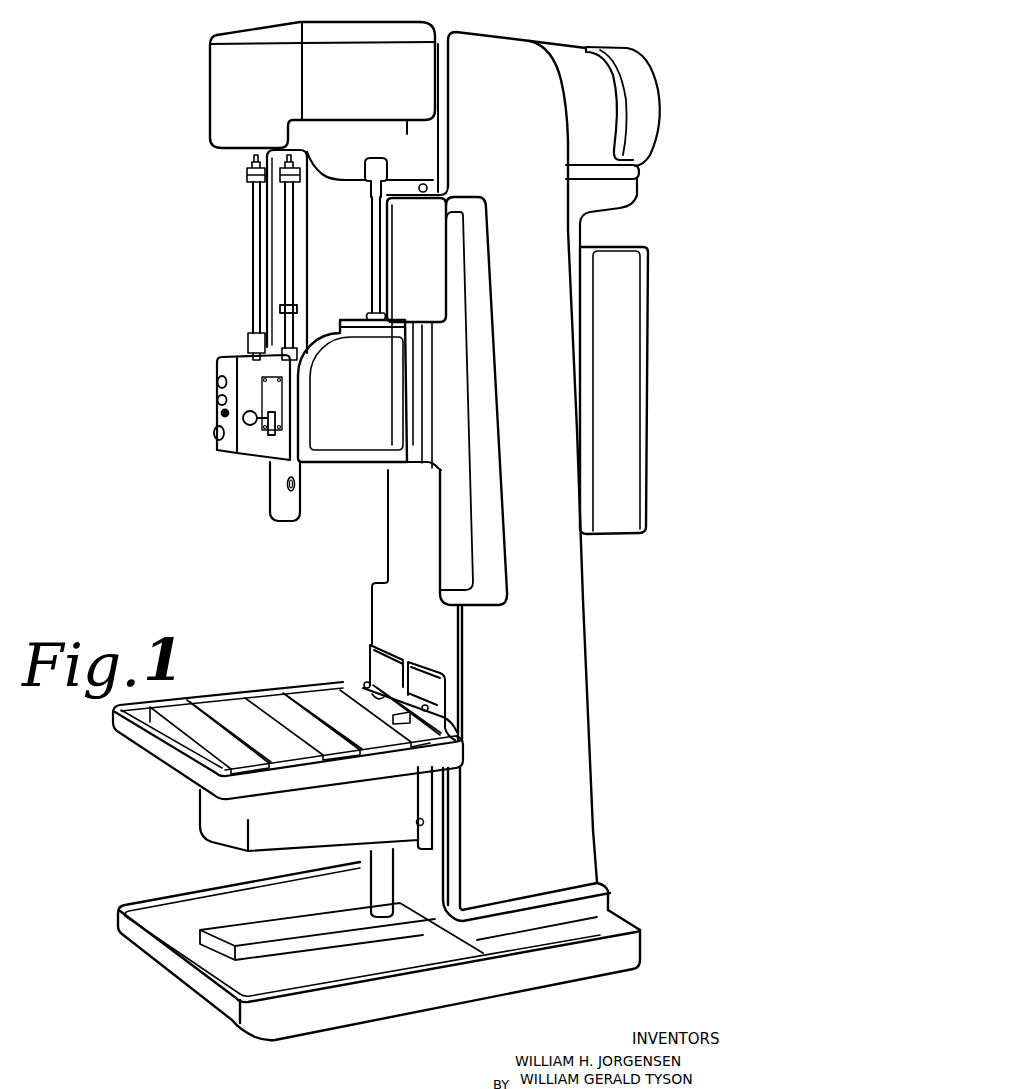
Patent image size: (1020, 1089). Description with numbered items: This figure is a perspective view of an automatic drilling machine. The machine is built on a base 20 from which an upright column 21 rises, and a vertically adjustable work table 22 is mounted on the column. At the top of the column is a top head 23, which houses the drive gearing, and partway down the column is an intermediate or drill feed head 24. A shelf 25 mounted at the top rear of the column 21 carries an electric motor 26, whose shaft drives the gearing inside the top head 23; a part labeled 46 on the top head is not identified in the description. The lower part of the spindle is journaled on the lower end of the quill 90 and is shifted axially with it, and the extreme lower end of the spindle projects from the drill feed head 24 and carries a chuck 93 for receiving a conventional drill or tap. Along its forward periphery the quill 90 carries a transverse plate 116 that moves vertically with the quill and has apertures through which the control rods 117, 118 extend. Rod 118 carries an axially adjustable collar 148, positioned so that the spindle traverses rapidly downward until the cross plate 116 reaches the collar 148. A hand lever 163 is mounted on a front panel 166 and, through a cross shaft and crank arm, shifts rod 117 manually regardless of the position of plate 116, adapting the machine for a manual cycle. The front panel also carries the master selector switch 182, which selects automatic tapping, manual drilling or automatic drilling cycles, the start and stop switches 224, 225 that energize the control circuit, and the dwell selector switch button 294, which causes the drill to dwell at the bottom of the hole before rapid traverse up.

The base 20 is at (630, 953).
The upright column 21 is at (580, 613).
The work table 22 is at (197, 772).
The top head 23 is at (227, 90).
The drill feed head 24 is at (363, 457).
The shelf 25 is at (640, 168).
The electric motor 26 is at (647, 120).
The housing cover 46 is at (218, 33).
The quill 90 is at (300, 262).
The chuck 93 is at (283, 508).
The transverse plate 116 is at (248, 176).
The control rod 117 is at (254, 217).
The control rod 118 is at (292, 232).
The collar 148 is at (298, 303).
The hand lever 163 is at (263, 436).
The front panel 166 is at (246, 445).
The master selector switch 182 is at (220, 377).
The start switch 224 is at (219, 413).
The stop switch 225 is at (216, 438).
The dwell selector switch button 294 is at (218, 400).